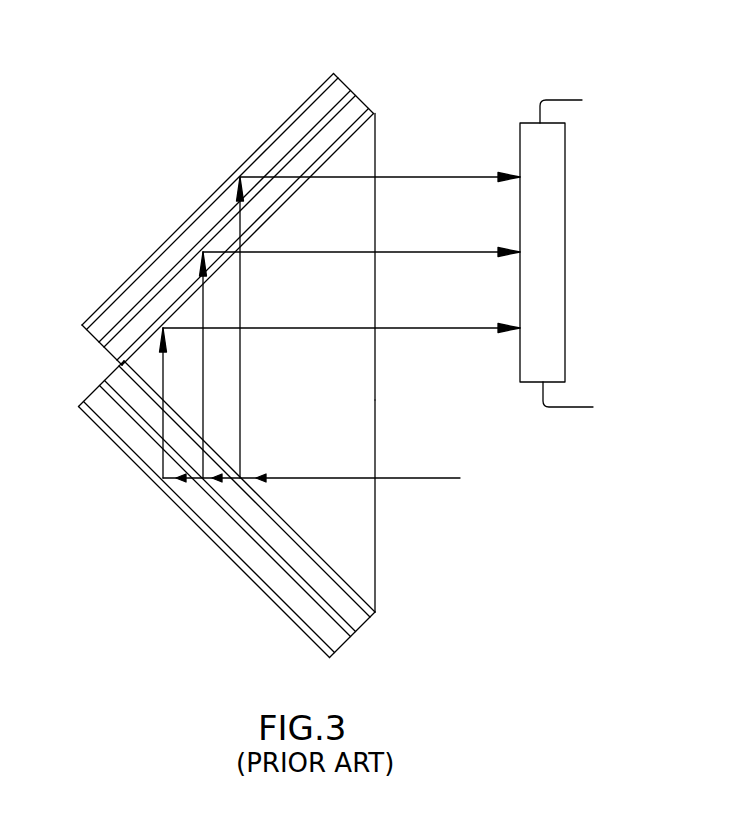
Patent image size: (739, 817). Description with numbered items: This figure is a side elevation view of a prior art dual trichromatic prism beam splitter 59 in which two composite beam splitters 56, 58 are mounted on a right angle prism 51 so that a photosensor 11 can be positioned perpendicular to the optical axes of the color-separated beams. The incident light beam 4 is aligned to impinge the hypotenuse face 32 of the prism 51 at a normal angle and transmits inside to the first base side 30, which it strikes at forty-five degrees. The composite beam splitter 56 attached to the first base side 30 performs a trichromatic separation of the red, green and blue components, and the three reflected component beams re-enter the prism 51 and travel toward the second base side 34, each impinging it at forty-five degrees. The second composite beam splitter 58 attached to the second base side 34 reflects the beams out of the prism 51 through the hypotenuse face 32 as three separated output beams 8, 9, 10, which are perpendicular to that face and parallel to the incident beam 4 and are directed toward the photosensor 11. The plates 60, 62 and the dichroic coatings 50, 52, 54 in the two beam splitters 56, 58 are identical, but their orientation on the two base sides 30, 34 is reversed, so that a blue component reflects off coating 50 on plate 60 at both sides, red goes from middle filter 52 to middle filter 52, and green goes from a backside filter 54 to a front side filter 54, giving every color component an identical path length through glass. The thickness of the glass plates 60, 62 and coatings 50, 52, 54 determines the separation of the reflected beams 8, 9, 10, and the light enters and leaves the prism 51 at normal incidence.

The incident light beam 4 is at (420, 478).
The output light beam 8 is at (443, 328).
The output light beam 9 is at (440, 252).
The output light beam 10 is at (447, 177).
The photosensor 11 is at (568, 165).
The first base side 30 is at (352, 582).
The hypotenuse face 32 is at (380, 512).
The second base side 34 is at (356, 140).
The dichroic coating 50 is at (334, 74).
The right angle prism 51 is at (378, 370).
The middle filter 52 is at (356, 97).
The backside filter 54 is at (375, 113).
The composite beam splitter 56 is at (233, 481).
The second composite beam splitter 58 is at (265, 361).
The trichromatic prism beam splitter 59 is at (96, 440).
The plate 60 is at (83, 329).
The plate 62 is at (110, 349).